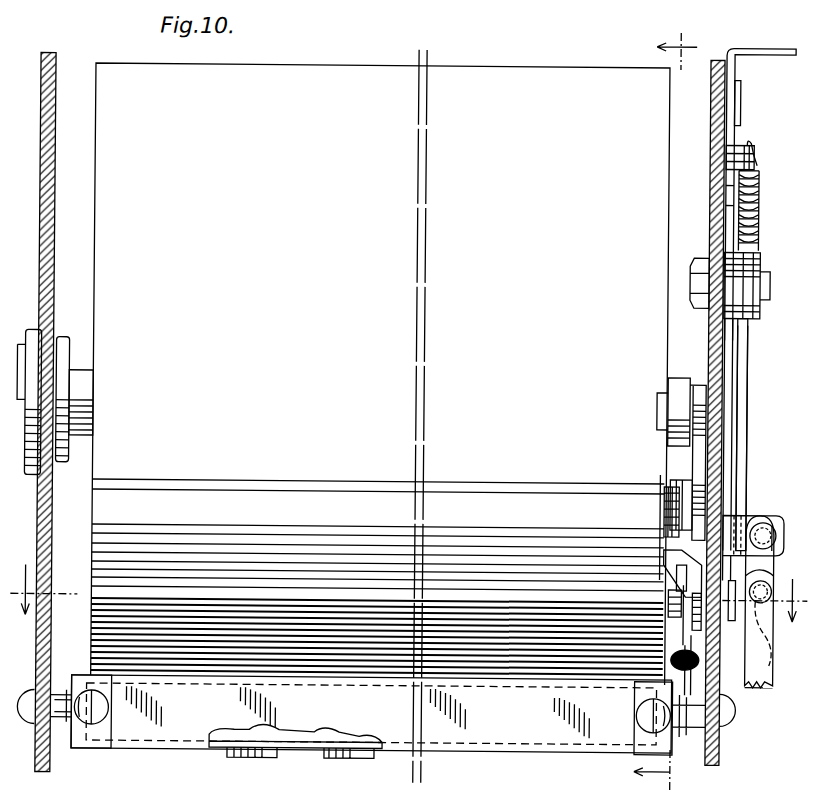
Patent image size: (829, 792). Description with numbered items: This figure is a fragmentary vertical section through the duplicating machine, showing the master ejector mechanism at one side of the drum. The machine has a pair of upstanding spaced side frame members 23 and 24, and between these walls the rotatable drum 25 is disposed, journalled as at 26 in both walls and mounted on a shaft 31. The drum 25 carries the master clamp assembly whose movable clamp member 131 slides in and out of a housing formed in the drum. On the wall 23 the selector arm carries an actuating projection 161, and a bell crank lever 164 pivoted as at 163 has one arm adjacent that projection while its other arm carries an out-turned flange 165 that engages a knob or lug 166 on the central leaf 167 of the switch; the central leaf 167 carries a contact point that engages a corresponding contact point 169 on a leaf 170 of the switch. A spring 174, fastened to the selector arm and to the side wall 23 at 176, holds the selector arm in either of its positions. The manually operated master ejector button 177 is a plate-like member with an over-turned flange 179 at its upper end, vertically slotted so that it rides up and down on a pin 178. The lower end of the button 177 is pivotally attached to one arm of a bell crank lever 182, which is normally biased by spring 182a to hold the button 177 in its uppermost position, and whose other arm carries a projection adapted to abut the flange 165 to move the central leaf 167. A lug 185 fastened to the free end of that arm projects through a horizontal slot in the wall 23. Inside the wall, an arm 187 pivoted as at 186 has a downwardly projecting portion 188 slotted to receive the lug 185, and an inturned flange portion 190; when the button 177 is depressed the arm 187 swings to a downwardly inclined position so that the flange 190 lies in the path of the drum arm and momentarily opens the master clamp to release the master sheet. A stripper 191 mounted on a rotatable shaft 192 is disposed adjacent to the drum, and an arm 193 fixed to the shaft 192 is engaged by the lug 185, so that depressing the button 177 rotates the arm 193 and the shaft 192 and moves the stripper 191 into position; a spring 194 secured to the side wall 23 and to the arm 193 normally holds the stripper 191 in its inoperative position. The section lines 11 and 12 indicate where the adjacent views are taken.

The section line 11- 11 is at (405, 584).
The section line 12- 12 is at (670, 399).
The side frame member 23 is at (711, 122).
The side frame member 24 is at (58, 72).
The rotatable drum 25 is at (555, 62).
The journal 26 is at (70, 343).
The shaft 31 is at (88, 383).
The movable clamp member 131 is at (255, 753).
The actuating projection 161 is at (727, 190).
The pivot 163 is at (772, 278).
The bell crank lever 164 is at (738, 360).
The out-turned flange 165 is at (753, 520).
The knob or lug 166 is at (770, 522).
The central leaf 167 is at (776, 548).
The contact point 169 is at (776, 652).
The leaf 170 is at (770, 680).
The spring 174 is at (762, 150).
The spring attachment point 176 is at (745, 142).
The master ejector button 177 is at (789, 38).
The pin 178 is at (742, 90).
The over-turned flange 179 is at (752, 43).
The bell crank lever 182 is at (752, 334).
The spring 182a is at (760, 216).
The lug 185 is at (673, 602).
The pivot 186 is at (670, 500).
The arm 187 is at (668, 545).
The downwardly projecting portion 188 is at (698, 618).
The inturned flange portion 190 is at (674, 476).
The stripper 191 is at (315, 752).
The shaft 192 is at (153, 745).
The arm 193 is at (681, 572).
The spring 194 is at (676, 650).